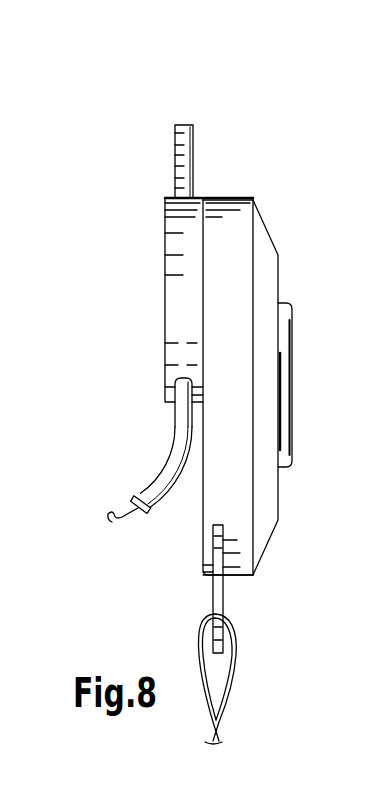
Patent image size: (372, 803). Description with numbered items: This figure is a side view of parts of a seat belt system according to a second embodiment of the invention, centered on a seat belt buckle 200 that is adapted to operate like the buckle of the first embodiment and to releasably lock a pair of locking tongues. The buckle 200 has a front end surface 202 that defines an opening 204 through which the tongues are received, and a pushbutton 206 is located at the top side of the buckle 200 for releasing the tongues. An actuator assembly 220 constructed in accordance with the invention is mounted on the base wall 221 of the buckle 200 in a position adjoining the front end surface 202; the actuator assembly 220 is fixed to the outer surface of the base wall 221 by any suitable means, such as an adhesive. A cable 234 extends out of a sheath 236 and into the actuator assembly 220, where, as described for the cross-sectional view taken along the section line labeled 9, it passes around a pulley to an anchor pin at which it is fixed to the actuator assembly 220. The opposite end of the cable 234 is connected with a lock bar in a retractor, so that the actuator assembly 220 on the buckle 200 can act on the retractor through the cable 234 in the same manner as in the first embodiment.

The section line 9- 9 is at (168, 93).
The seat belt buckle 200 is at (189, 496).
The front end surface 202 is at (245, 199).
The opening 204 is at (227, 186).
The pushbutton 206 is at (293, 376).
The actuator assembly 220 is at (156, 258).
The base wall 221 is at (200, 543).
The cable 234 is at (118, 521).
The sheath 236 is at (146, 496).